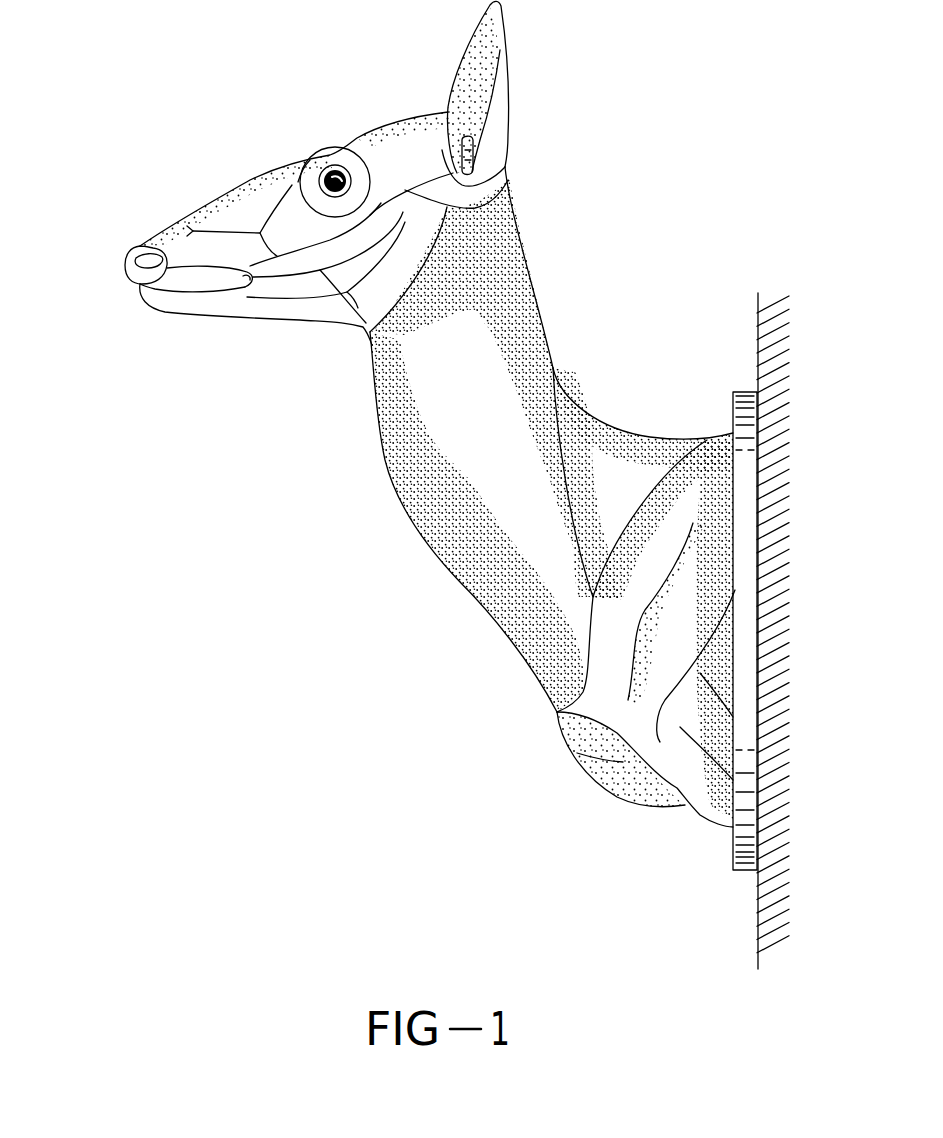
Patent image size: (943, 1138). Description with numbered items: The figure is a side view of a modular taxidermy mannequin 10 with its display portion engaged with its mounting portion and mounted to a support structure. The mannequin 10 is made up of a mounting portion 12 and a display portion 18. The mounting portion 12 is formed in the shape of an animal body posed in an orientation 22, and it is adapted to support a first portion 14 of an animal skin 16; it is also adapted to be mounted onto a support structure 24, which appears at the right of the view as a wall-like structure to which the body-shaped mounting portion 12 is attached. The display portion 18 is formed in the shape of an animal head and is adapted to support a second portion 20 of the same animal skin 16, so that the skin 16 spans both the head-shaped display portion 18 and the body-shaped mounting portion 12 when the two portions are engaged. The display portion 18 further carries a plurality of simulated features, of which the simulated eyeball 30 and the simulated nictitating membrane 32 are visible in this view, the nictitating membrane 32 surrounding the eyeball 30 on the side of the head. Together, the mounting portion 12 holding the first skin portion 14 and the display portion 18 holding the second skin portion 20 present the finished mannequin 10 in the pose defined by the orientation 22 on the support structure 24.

The modular taxidermy mannequin 10 is at (172, 116).
The mounting portion 12 is at (602, 405).
The first portion of animal skin 14 is at (487, 618).
The animal skin 16 is at (552, 318).
The display portion 18 is at (245, 338).
The second portion of animal skin 20 is at (247, 177).
The orientation 22 is at (350, 513).
The support structure 24 is at (733, 413).
The simulated eyeball 30 is at (346, 170).
The simulated nictitating membrane 32 is at (319, 172).